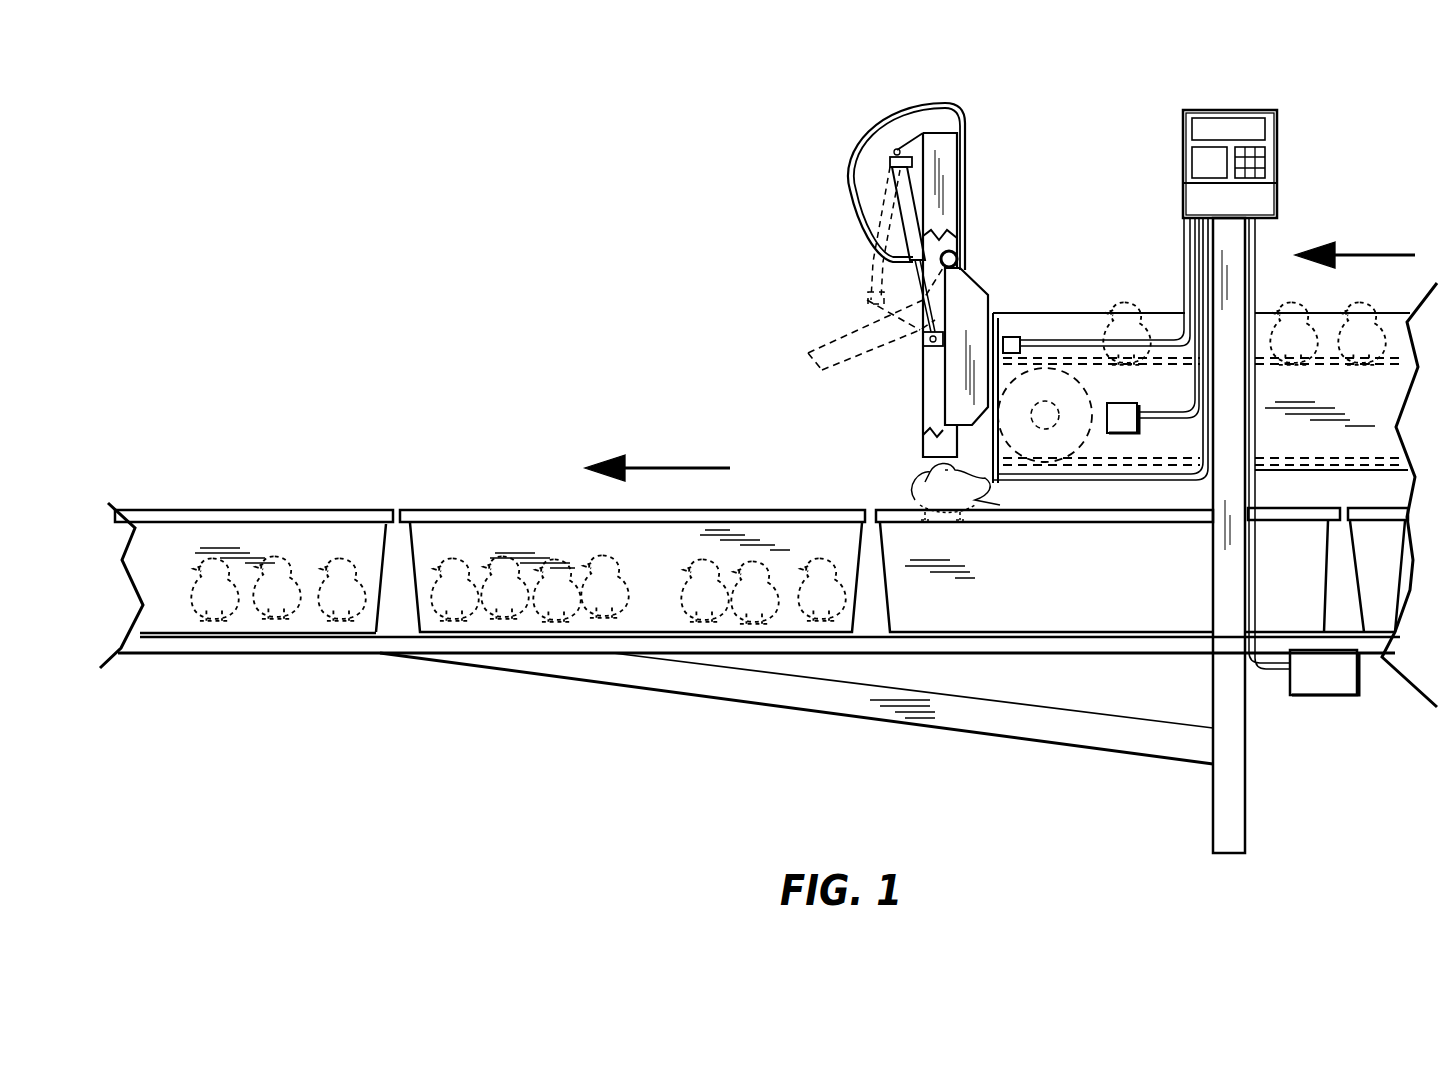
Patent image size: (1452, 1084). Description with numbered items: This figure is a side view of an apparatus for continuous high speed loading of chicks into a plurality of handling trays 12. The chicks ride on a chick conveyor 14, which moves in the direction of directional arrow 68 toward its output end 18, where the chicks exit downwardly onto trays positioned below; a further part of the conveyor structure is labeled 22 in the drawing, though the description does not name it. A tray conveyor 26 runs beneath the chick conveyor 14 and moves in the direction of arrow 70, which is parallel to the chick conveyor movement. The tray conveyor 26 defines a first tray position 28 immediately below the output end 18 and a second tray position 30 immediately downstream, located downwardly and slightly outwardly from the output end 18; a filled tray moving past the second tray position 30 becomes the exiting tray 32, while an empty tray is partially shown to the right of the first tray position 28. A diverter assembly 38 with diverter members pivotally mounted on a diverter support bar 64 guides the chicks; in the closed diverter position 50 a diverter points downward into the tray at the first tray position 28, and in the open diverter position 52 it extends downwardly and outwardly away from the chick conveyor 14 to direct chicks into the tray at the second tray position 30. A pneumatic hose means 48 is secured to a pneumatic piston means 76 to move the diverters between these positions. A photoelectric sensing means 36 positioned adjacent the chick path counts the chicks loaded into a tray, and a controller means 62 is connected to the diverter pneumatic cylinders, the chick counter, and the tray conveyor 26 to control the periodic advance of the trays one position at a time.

The handling tray 12 is at (672, 566).
The chick conveyor 14 is at (1395, 358).
The output end 18 is at (1030, 363).
The frame 22 is at (1163, 320).
The tray conveyor 26 is at (1125, 643).
The first tray position 28 is at (900, 530).
The second tray position 30 is at (513, 523).
The exiting tray 32 is at (172, 574).
The photoelectric sensing means 36 is at (1015, 337).
The diverter assembly 38 is at (950, 195).
The pneumatic hose means 48 is at (863, 138).
The closed diverter position 50 is at (988, 295).
The open diverter position 52 is at (825, 338).
The controller means 62 is at (1245, 213).
The diverter support bar 64 is at (937, 137).
The directional arrow 68 is at (1362, 252).
The tray conveyor movement direction arrow 70 is at (672, 466).
The pneumatic piston means 76 is at (880, 212).